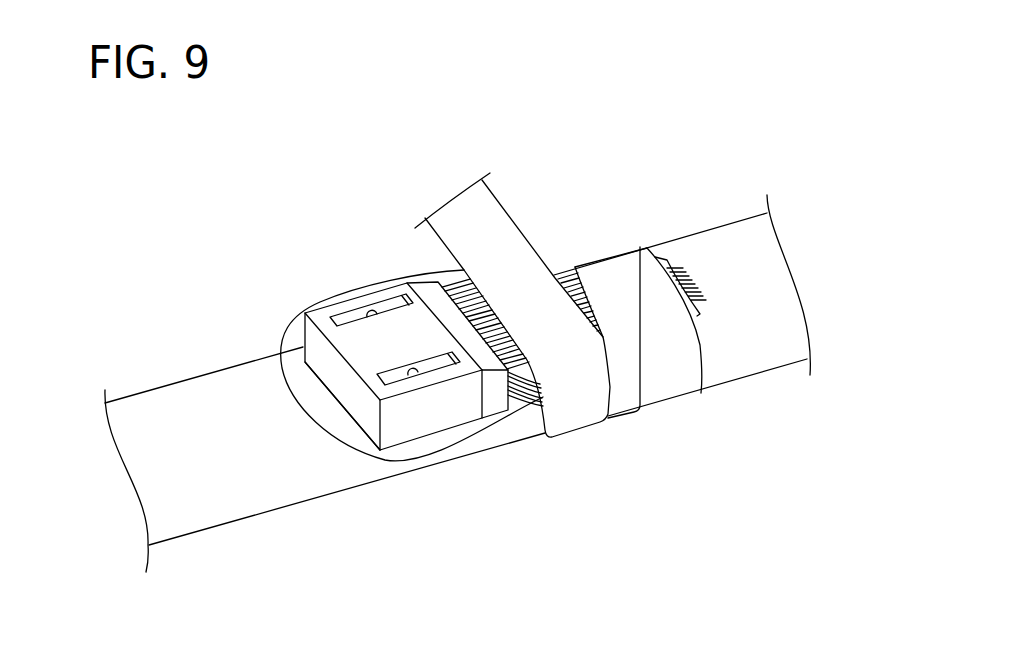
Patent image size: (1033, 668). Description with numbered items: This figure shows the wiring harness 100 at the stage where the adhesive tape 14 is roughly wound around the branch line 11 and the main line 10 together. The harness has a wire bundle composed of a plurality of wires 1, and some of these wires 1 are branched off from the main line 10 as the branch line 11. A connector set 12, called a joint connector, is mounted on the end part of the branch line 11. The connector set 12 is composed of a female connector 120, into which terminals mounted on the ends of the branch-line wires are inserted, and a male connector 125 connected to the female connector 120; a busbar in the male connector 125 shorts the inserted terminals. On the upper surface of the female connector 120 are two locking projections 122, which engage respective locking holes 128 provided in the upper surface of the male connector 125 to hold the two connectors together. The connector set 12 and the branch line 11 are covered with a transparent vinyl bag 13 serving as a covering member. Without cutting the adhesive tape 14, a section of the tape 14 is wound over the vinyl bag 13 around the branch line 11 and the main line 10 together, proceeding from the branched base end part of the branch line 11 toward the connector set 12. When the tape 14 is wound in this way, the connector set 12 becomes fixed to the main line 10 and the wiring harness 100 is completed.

The wires 1 is at (529, 405).
The main line 10 is at (233, 495).
The branch line 11 is at (457, 272).
The connector set 12 is at (405, 408).
The vinyl bag 13 is at (290, 342).
The adhesive tape 14 is at (472, 218).
The wiring harness 100 is at (522, 143).
The female connector 120 is at (497, 407).
The locking projections 122 is at (400, 290).
The male connector 125 is at (395, 432).
The locking holes 128 is at (406, 421).